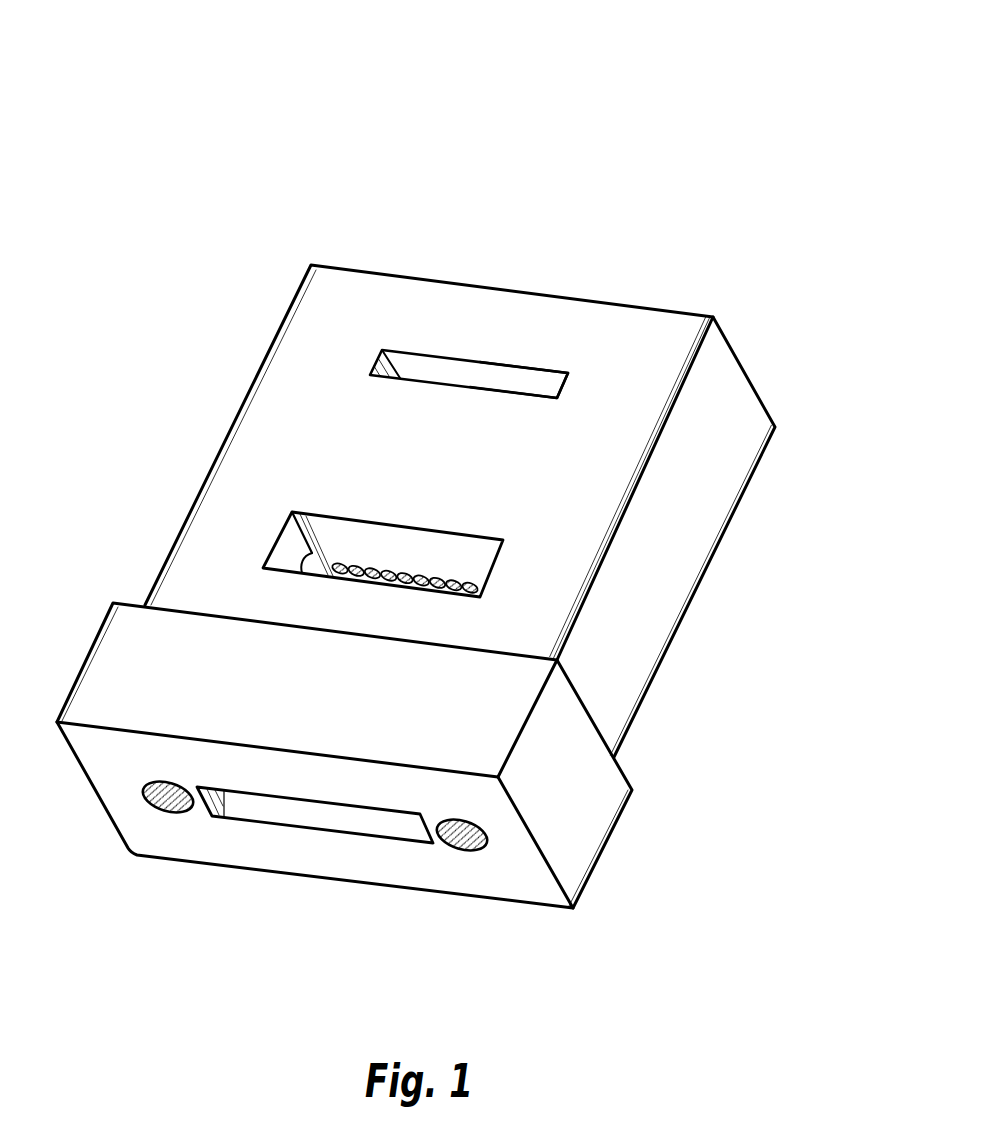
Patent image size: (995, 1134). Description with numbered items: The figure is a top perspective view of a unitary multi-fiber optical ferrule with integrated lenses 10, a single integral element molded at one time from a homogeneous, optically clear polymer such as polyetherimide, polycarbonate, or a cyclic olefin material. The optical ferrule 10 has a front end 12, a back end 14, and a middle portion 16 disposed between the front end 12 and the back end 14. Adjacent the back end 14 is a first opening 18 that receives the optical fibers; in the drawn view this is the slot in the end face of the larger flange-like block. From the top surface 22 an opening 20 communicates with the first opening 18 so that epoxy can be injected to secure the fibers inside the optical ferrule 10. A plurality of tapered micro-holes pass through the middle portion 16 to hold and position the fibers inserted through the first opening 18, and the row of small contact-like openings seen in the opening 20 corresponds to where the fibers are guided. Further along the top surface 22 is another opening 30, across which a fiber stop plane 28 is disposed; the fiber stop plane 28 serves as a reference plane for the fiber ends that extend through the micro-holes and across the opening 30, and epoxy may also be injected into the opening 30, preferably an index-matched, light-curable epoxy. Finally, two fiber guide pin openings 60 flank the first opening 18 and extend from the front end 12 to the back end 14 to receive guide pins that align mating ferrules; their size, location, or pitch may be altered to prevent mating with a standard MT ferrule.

The unitary multi-fiber optical ferrule with integrated lenses 10 is at (359, 138).
The front end 12 is at (757, 357).
The back end 14 is at (532, 883).
The middle portion 16 is at (719, 570).
The first opening 18 is at (355, 823).
The opening 20 is at (507, 548).
The top surface 22 is at (342, 446).
The fiber stop plane 28 is at (452, 368).
The opening 30 is at (534, 380).
The fiber guide pin openings 60 is at (175, 805).